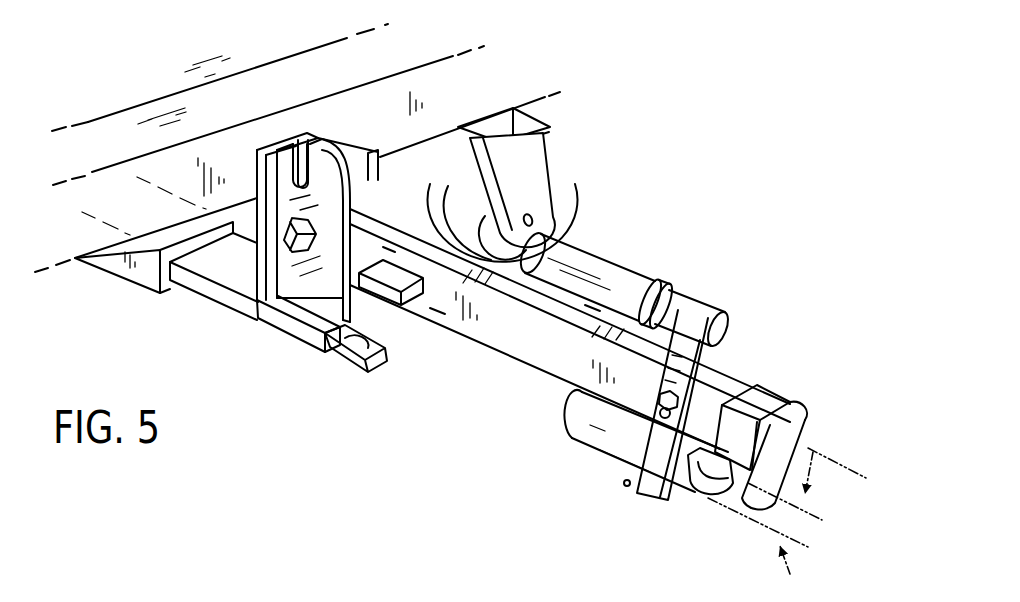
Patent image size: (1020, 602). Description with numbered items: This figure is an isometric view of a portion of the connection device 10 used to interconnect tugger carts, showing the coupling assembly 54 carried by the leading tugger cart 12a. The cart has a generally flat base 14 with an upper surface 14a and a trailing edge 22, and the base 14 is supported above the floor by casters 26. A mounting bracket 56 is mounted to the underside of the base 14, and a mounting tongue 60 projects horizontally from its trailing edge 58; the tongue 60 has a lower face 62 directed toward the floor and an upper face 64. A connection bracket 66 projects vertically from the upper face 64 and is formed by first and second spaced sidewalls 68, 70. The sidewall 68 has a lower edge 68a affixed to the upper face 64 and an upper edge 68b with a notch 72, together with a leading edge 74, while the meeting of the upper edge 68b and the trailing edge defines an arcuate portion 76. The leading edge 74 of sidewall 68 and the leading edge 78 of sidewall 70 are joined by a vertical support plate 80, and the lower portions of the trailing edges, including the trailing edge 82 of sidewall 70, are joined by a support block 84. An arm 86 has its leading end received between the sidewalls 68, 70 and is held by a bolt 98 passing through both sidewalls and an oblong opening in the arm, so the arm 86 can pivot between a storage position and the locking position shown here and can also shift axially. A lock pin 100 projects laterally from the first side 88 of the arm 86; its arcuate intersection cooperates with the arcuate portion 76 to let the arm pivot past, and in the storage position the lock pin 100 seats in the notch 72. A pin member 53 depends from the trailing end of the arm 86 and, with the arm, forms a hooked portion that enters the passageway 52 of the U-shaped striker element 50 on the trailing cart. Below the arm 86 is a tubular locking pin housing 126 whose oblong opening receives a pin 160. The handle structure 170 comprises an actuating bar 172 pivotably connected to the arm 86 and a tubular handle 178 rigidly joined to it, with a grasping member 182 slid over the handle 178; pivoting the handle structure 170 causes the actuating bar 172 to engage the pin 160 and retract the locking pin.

The connection device 10 is at (538, 435).
The leading tugger cart 12a is at (77, 270).
The base 14 is at (521, 64).
The upper surface 14a is at (327, 35).
The trailing edge 22 is at (473, 105).
The caster 26 is at (563, 154).
The striker element 50 is at (788, 564).
The passageway 52 is at (826, 453).
The pin member 53 is at (797, 447).
The coupling assembly 54 is at (340, 376).
The mounting bracket 56 is at (126, 289).
The trailing edge 58 is at (173, 295).
The mounting tongue 60 is at (203, 297).
The lower face 62 is at (278, 297).
The upper face 64 is at (209, 252).
The connection bracket 66 is at (182, 91).
The first sidewall 68 is at (300, 300).
The lower edge 68a is at (326, 330).
The upper edge 68b is at (269, 132).
The second sidewall 70 is at (406, 108).
The notch 72 is at (292, 172).
The leading edge 74 is at (208, 252).
The arcuate portion 76 is at (338, 166).
The leading edge 78 is at (312, 146).
The support plate 80 is at (262, 195).
The trailing edge 82 is at (381, 173).
The support block 84 is at (382, 310).
The arm 86 is at (593, 306).
The first side 88 is at (553, 356).
The bolt 98 is at (286, 243).
The lock pin 100 is at (438, 312).
The locking pin housing 126 is at (577, 441).
The pin 160 is at (626, 486).
The handle structure 170 is at (722, 297).
The actuating bar 172 is at (700, 360).
The tubular handle 178 is at (670, 300).
The grasping member 182 is at (578, 242).